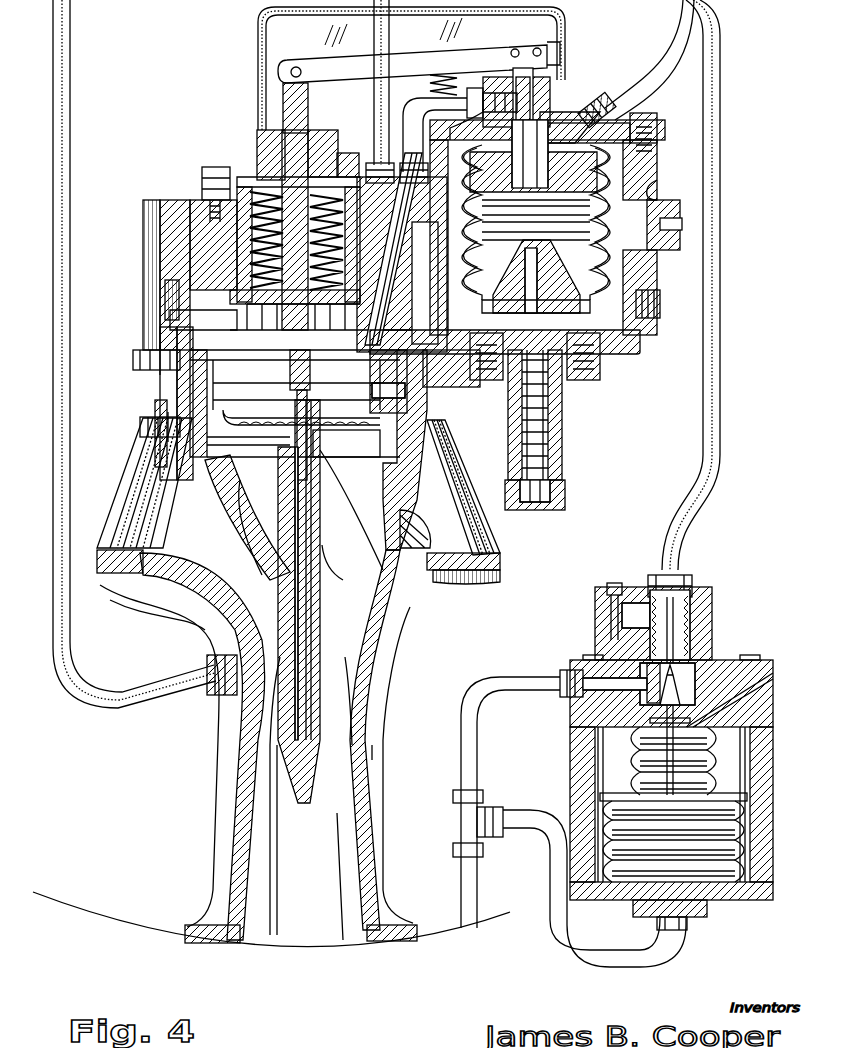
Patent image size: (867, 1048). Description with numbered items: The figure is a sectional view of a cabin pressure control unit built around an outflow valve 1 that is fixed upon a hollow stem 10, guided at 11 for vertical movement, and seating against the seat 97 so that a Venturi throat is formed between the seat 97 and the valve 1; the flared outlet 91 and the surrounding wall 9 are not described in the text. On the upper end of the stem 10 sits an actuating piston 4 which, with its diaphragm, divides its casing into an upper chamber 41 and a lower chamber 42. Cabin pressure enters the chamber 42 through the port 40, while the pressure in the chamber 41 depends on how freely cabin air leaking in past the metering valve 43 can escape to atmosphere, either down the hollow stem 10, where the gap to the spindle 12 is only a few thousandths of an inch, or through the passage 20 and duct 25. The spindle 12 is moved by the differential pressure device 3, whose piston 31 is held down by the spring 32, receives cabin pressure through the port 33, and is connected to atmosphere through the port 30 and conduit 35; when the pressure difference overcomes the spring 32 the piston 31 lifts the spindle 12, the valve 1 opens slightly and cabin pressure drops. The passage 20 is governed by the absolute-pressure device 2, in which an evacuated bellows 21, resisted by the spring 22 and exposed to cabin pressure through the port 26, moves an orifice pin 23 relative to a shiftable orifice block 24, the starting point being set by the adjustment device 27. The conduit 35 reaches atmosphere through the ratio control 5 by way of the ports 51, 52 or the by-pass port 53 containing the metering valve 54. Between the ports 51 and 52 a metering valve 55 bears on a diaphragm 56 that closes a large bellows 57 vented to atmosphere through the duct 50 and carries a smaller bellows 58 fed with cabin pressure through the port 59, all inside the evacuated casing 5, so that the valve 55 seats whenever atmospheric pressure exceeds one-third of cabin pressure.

The outflow valve 1 is at (375, 607).
The absolute-pressure device 2 is at (662, 190).
The differential pressure device 3 is at (250, 165).
The actuating piston 4 is at (396, 393).
The ratio control 5 is at (577, 780).
The combustion chamber wall 9 is at (120, 922).
The stem 10 is at (316, 474).
The guide 11 is at (277, 452).
The spindle 12 is at (290, 369).
The passage 20 is at (397, 309).
The evacuated bellows 21 is at (618, 265).
The spring 22 is at (648, 302).
The orifice pin 23 is at (560, 112).
The orifice block 24 is at (545, 77).
The duct 25 is at (72, 42).
The port 26 is at (675, 223).
The adjustment device 27 is at (553, 430).
The port 30 is at (365, 180).
The piston 31 is at (168, 296).
The spring 32 is at (154, 236).
The port 33 is at (197, 309).
The conduit 35 is at (730, 326).
The port 40 is at (185, 437).
The chamber 41 is at (295, 403).
The chamber 42 is at (303, 441).
The metering valve 43 is at (172, 386).
The duct 50 is at (565, 958).
The port 51 is at (670, 630).
The port 52 is at (617, 688).
The by-pass port 53 is at (640, 598).
The metering valve 54 is at (610, 623).
The metering valve 55 is at (693, 695).
The diaphragm 56 is at (735, 800).
The large bellows 57 is at (740, 836).
The smaller bellows 58 is at (722, 758).
The port 59 is at (752, 691).
The nozzle outlet 91 is at (338, 935).
The seat 97 is at (252, 631).